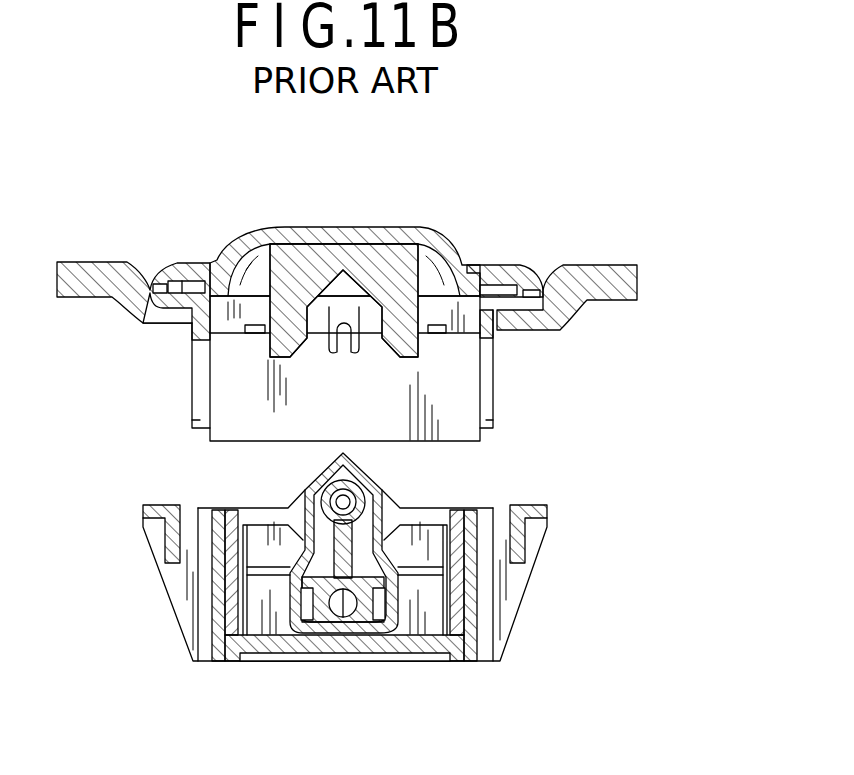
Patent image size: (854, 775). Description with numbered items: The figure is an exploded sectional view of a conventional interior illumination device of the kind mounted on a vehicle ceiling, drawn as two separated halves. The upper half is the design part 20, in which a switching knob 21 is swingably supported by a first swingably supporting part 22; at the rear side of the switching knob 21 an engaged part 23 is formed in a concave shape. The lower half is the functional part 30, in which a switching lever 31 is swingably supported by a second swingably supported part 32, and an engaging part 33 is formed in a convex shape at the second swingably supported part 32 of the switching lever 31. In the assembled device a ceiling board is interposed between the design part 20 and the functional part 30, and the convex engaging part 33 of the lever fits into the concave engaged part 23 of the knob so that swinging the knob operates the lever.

The design part 20 is at (347, 277).
The switching knob 21 is at (360, 231).
The first swingably supporting part 22 is at (325, 322).
The engaged part 23 is at (353, 293).
The functional part 30 is at (408, 602).
The switching lever 31 is at (292, 600).
The second swingably supported part 32 is at (383, 490).
The engaging part 33 is at (305, 466).